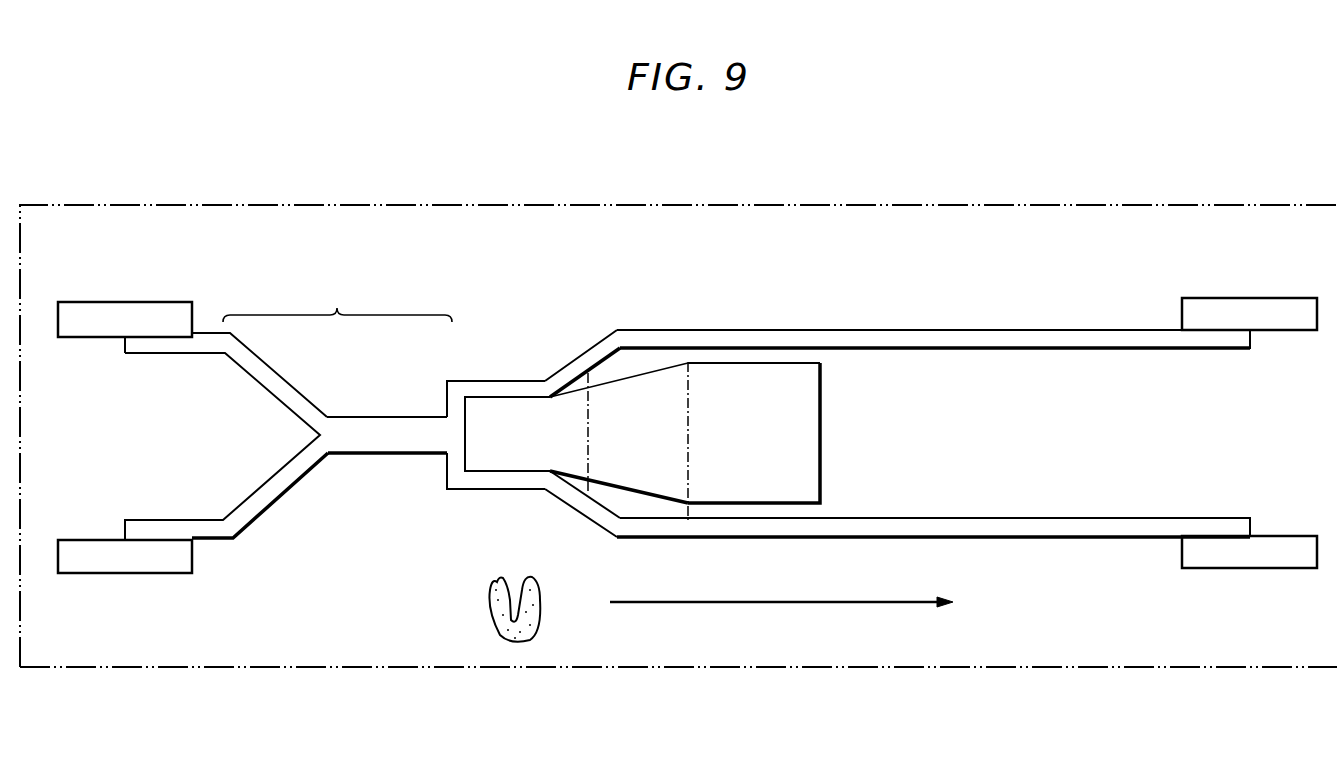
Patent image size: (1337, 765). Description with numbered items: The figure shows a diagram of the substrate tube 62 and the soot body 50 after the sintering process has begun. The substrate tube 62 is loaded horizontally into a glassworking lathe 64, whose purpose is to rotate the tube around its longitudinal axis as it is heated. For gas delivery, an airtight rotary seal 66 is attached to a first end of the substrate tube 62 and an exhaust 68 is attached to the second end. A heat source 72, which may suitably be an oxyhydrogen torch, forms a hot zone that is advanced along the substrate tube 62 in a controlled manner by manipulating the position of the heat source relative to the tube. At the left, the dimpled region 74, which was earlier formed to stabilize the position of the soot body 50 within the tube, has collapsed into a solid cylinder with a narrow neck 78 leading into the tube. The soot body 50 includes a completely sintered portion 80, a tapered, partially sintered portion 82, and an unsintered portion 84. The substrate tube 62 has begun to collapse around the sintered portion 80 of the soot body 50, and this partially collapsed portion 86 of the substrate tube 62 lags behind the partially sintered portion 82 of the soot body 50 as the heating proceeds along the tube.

The soot body 50 is at (848, 440).
The substrate tube 62 is at (857, 330).
The glassworking lathe 64 is at (683, 204).
The airtight rotary seal 66 is at (125, 302).
The exhaust 68 is at (1250, 298).
The heat source 72 is at (542, 605).
The dimpled region 74 is at (288, 407).
The neck passage 78 is at (385, 454).
The completely sintered portion 80 is at (488, 413).
The partially sintered portion 82 is at (650, 395).
The unsintered portion 84 is at (752, 380).
The partially collapsed portion 86 is at (588, 350).